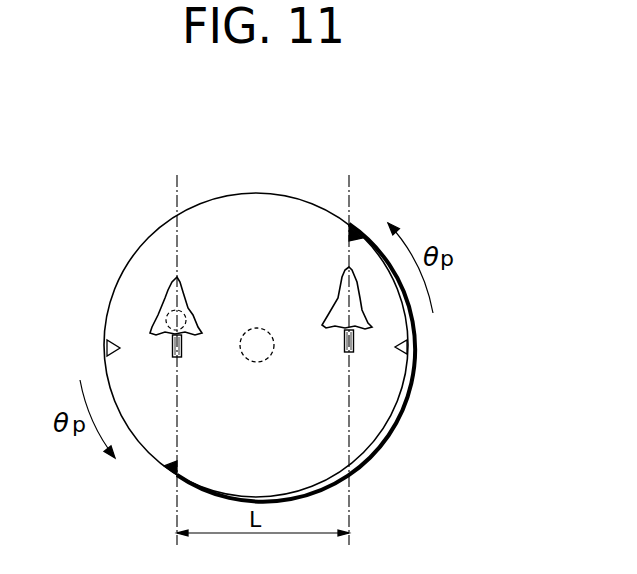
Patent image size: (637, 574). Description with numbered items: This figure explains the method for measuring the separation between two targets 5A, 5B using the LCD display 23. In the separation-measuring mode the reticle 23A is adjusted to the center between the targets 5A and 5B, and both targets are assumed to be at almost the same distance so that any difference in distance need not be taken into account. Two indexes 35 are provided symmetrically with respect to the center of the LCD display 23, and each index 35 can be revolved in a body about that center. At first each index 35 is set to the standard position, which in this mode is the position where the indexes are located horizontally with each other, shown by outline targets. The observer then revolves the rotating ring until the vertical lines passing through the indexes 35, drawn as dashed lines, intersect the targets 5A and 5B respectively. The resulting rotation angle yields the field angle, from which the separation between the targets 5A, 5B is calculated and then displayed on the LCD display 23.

The LCD display 23 is at (292, 197).
The reticle 23A is at (257, 327).
The target 5A is at (163, 290).
The target 5B is at (363, 317).
The index 35 is at (362, 230).